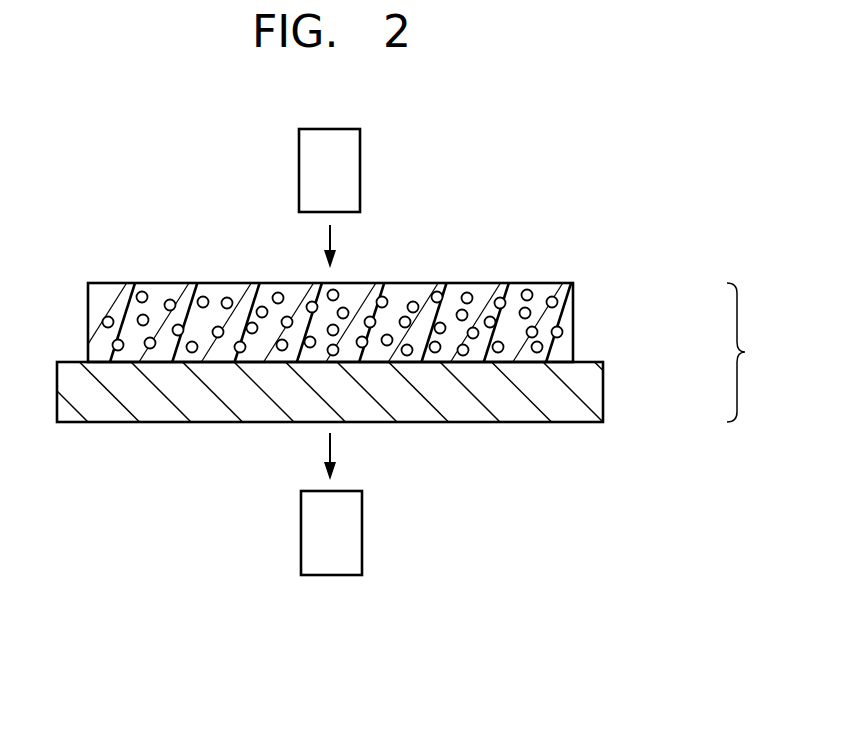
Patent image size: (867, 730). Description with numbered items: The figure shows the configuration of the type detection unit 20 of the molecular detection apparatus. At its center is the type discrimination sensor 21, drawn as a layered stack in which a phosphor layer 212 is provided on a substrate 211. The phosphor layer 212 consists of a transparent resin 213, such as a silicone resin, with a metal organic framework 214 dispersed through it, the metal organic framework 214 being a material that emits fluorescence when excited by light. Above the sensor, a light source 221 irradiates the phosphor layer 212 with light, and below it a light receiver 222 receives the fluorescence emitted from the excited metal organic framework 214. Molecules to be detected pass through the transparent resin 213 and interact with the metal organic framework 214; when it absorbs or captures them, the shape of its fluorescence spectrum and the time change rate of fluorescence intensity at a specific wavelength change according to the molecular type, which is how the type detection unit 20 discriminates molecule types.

The type detection unit 20 is at (573, 198).
The type discrimination sensor 21 is at (754, 352).
The substrate 211 is at (603, 392).
The phosphor layer 212 is at (387, 297).
The transparent resin 213 is at (415, 283).
The metal organic framework (MOF) 214 is at (505, 298).
The light source 221 is at (360, 169).
The light receiver 222 is at (362, 530).